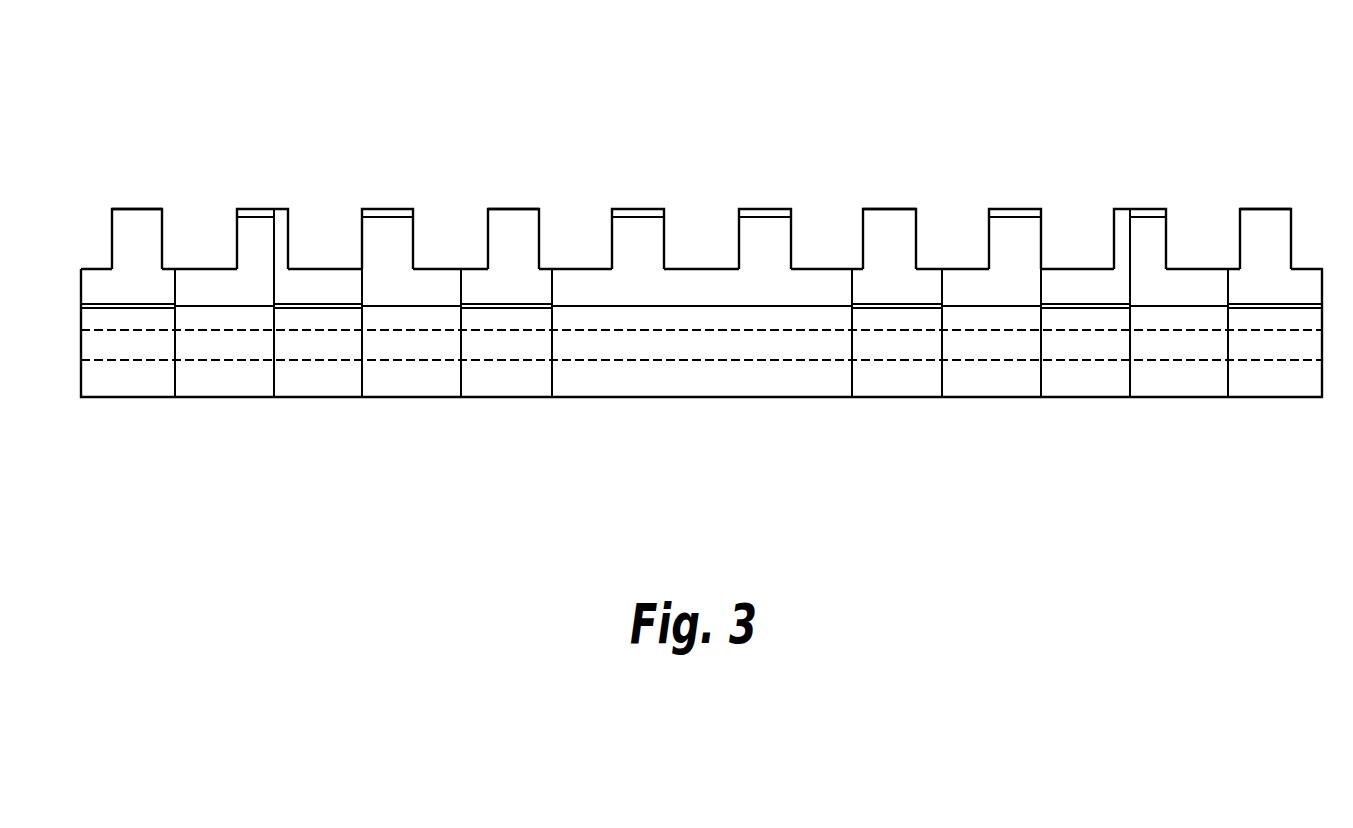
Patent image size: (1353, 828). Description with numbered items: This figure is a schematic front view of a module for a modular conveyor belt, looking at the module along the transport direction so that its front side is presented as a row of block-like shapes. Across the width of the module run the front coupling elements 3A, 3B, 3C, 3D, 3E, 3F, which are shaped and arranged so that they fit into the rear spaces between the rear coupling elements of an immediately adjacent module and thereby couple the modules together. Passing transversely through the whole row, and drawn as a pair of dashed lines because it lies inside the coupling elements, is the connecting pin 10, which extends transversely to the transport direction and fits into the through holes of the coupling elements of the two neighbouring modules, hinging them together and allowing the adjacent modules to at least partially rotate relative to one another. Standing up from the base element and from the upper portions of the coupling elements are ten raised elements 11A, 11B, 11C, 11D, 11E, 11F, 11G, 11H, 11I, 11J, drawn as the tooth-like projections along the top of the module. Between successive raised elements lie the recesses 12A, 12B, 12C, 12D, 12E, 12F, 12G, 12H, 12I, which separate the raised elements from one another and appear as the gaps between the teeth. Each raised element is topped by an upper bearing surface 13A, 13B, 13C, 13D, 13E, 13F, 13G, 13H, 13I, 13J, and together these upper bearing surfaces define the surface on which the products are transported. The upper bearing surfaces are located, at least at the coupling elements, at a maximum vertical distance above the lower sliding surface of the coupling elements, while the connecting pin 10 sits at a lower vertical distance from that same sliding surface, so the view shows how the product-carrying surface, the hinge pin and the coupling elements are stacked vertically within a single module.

The front coupling element 3A is at (125, 365).
The front coupling element 3B is at (290, 365).
The front coupling element 3C is at (512, 365).
The front coupling element 3D is at (890, 400).
The front coupling element 3E is at (1062, 400).
The front coupling element 3F is at (1287, 400).
The connecting pin 10 is at (634, 350).
The raised element 11A is at (124, 208).
The raised element 11B is at (242, 208).
The raised element 11C is at (374, 208).
The raised element 11D is at (500, 208).
The raised element 11E is at (624, 208).
The raised element 11F is at (751, 208).
The raised element 11G is at (880, 208).
The raised element 11H is at (1003, 208).
The raised element 11I is at (1126, 208).
The raised element 11J is at (1252, 208).
The recess 12A is at (203, 247).
The recess 12B is at (328, 247).
The recess 12C is at (437, 249).
The recess 12D is at (570, 249).
The recess 12E is at (695, 249).
The recess 12F is at (813, 249).
The recess 12G is at (960, 249).
The recess 12H is at (1092, 249).
The recess 12I is at (1192, 249).
The upper bearing surface 13A is at (147, 208).
The upper bearing surface 13B is at (265, 208).
The upper bearing surface 13C is at (397, 208).
The upper bearing surface 13D is at (523, 208).
The upper bearing surface 13E is at (648, 208).
The upper bearing surface 13F is at (774, 208).
The upper bearing surface 13G is at (902, 208).
The upper bearing surface 13H is at (1027, 208).
The upper bearing surface 13I is at (1149, 208).
The upper bearing surface 13J is at (1275, 208).